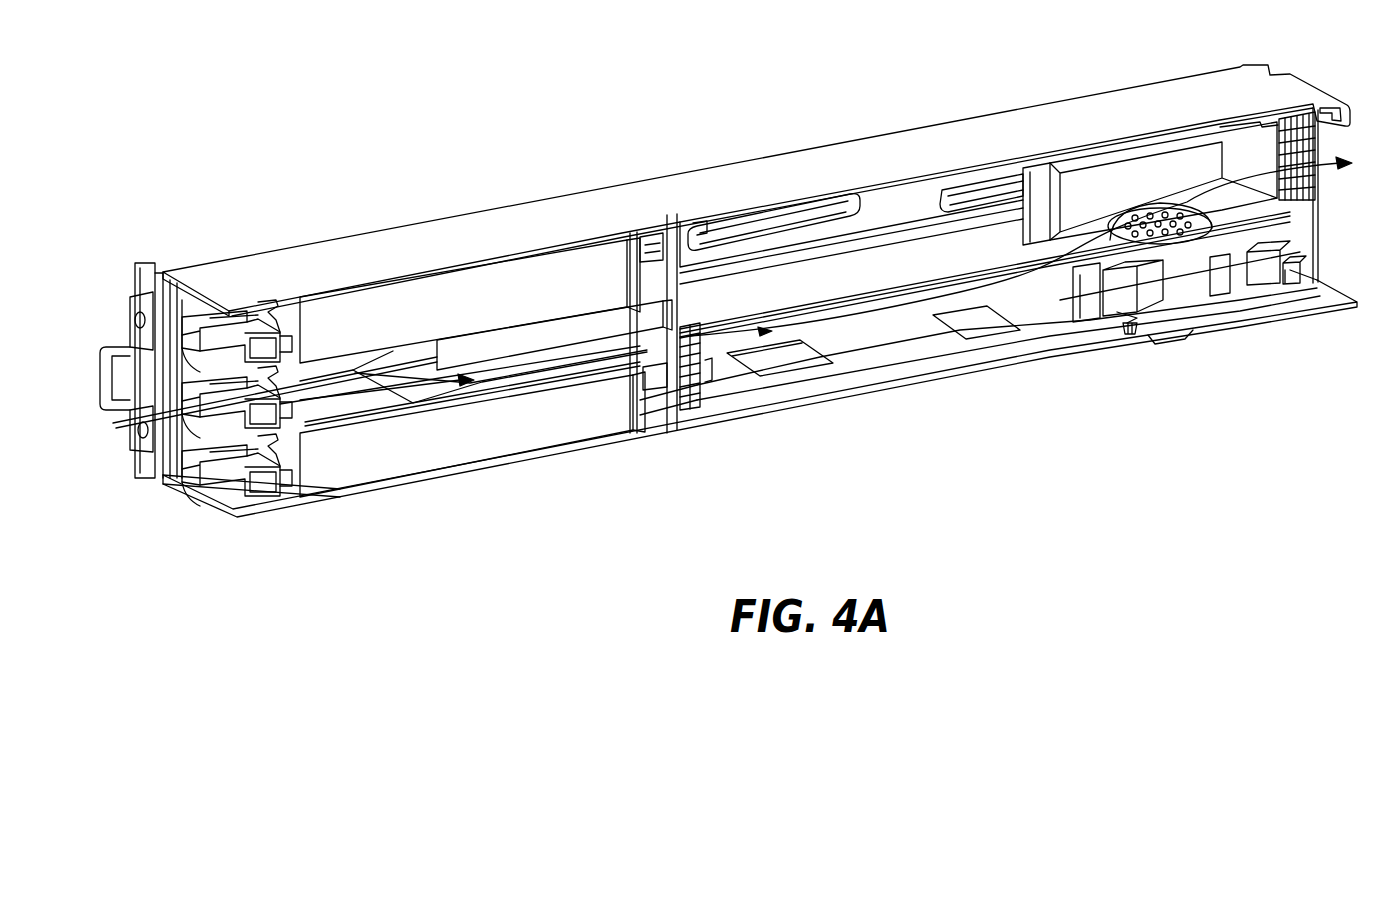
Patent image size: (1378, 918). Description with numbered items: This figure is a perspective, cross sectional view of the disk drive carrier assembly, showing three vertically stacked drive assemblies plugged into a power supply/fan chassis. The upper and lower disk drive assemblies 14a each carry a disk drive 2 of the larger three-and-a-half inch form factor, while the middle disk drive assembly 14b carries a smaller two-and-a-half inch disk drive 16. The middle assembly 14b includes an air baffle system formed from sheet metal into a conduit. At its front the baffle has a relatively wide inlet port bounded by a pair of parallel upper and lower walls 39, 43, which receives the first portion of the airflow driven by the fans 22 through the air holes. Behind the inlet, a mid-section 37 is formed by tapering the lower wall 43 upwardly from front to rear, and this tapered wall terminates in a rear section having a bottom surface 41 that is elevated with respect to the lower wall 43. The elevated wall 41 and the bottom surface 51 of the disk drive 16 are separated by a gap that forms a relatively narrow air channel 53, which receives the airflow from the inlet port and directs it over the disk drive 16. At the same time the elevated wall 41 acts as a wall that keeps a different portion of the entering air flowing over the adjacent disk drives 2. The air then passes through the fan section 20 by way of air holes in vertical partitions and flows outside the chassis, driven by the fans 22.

The disk drive 2 is at (455, 309).
The disk drive assembly 14a is at (182, 328).
The disk drive assembly 14b is at (182, 392).
The disk drive 16 is at (566, 347).
The fan section 20 is at (881, 240).
The fan 22 is at (1128, 177).
The mid-section 37 is at (411, 377).
The upper wall 39 is at (357, 363).
The bottom surface 41 is at (543, 370).
The lower wall 43 is at (317, 403).
The bottom surface of the disk drive 51 is at (500, 370).
The air channel 53 is at (660, 380).